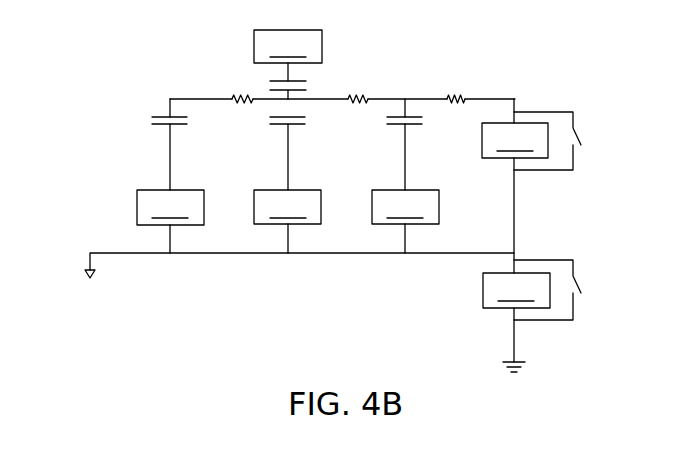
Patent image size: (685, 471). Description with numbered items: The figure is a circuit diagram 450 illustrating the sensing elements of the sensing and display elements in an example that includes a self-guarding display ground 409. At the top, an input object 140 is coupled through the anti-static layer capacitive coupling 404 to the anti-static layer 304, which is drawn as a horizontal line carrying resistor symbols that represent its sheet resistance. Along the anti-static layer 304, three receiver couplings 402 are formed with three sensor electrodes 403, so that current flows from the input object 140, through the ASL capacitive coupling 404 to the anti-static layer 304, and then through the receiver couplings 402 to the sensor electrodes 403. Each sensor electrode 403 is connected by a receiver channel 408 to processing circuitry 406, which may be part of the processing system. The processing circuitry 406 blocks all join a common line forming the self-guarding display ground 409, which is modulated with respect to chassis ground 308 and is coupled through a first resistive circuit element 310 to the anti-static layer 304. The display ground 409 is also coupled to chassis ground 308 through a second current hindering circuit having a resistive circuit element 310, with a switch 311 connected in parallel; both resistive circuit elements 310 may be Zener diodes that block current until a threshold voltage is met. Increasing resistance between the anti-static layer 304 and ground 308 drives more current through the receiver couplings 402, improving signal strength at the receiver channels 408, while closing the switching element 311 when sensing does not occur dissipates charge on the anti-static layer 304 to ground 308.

The circuit diagram 450 is at (186, 78).
The input object 140 is at (288, 55).
The anti-static layer capacitive coupling 404 is at (296, 81).
The anti-static layer 304 is at (484, 98).
The receiver couplings 402 is at (142, 118).
The sensor electrodes 403 is at (163, 125).
The receiver channels 408 is at (170, 158).
The processing circuitry 406 is at (288, 221).
The self-guarding display ground 409 is at (88, 280).
The resistive circuit element 310 is at (516, 230).
The switching element 311 is at (582, 133).
The ground 308 is at (520, 362).